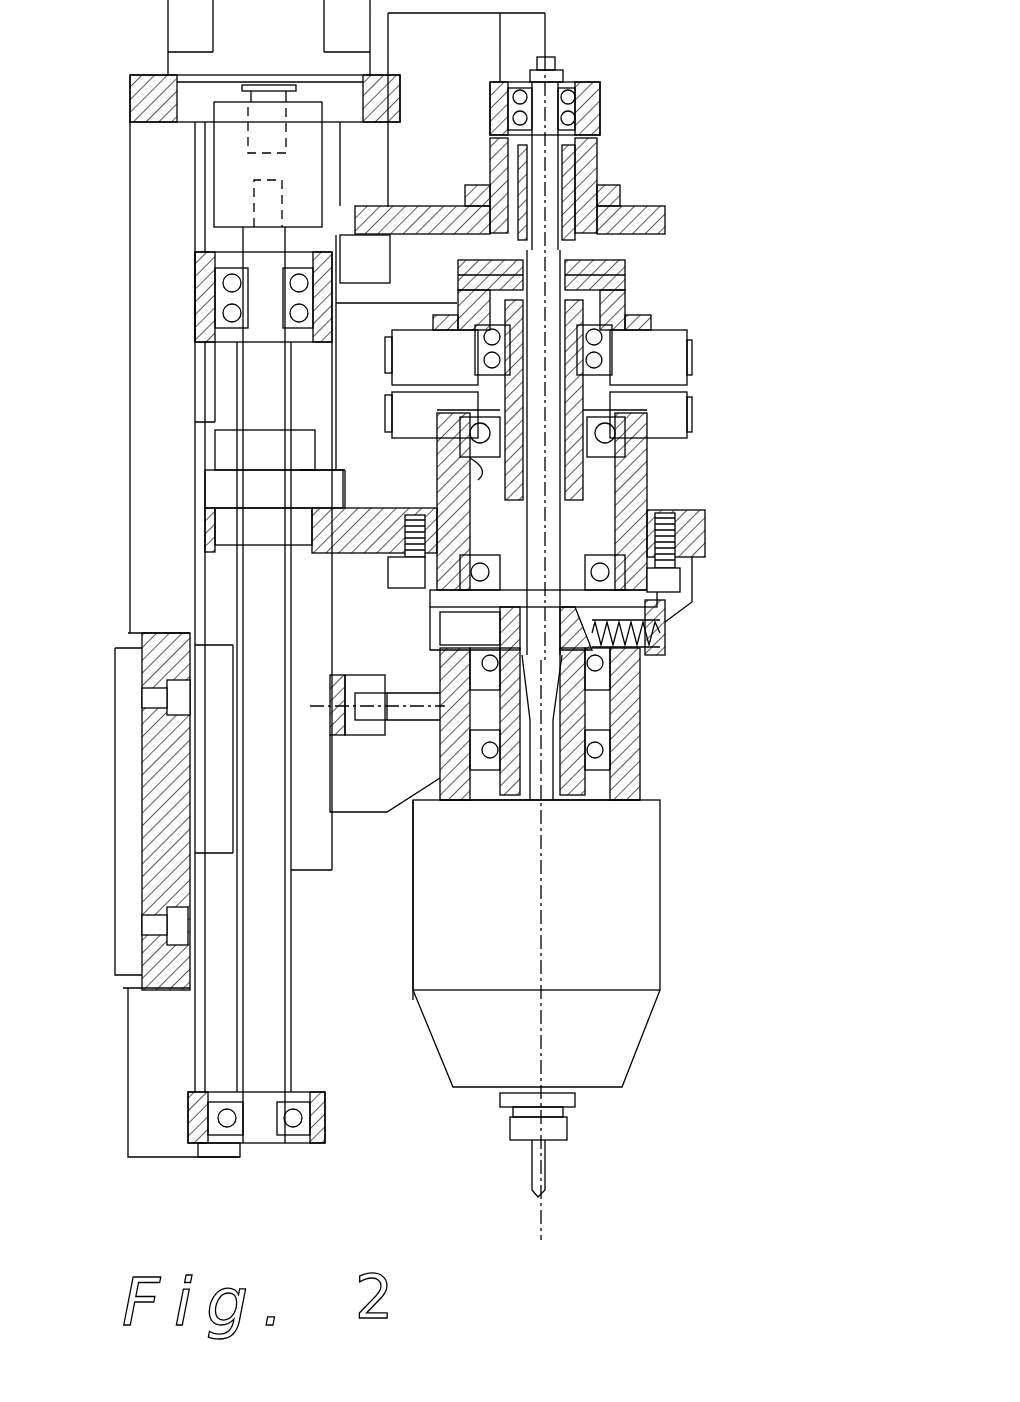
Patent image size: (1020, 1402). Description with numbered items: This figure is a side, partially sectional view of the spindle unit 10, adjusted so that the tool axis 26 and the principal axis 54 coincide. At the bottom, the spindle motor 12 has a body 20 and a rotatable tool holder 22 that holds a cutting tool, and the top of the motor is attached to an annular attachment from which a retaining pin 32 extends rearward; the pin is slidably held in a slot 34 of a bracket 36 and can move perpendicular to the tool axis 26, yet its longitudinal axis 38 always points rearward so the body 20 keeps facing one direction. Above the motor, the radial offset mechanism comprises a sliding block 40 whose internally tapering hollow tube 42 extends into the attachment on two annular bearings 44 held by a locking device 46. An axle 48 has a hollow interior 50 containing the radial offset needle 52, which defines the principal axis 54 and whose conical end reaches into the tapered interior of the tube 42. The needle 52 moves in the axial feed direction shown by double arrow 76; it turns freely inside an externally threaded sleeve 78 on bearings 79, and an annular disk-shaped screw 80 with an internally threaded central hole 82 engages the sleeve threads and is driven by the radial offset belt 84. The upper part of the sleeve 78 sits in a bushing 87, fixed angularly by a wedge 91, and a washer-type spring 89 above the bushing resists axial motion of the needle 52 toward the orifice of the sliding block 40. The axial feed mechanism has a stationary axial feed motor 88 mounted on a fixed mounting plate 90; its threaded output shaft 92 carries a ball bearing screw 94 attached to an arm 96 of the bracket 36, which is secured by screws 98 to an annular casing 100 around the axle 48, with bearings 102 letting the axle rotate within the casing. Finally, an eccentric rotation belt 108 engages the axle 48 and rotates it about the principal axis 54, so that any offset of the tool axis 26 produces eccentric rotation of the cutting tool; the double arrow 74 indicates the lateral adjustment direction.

The spindle unit 10 is at (754, 99).
The spindle motor 12 is at (708, 1078).
The body 20 is at (643, 935).
The rotatable tool holder 22 is at (560, 1128).
The tool axis 26 is at (541, 860).
The retaining pin 32 is at (387, 812).
The slot 34 is at (360, 683).
The bracket 36 is at (380, 784).
The longitudinal axis 38 is at (395, 708).
The sliding block 40 is at (640, 660).
The hollow tube 42 is at (560, 712).
The annular bearings 44 is at (620, 790).
The locking device 46 is at (620, 788).
The axle 48 is at (556, 515).
The hollow interior 50 is at (552, 540).
The radial offset needle 52 is at (700, 539).
The principal axis 54 is at (548, 490).
The lateral adjustment direction 74 is at (728, 630).
The double arrow 76 is at (537, 1256).
The externally threaded sleeve 78 is at (585, 233).
The bearings 79 is at (575, 86).
The disk-shaped screw 80 is at (624, 286).
The central hole 82 is at (458, 279).
The radial offset belt 84 is at (668, 341).
The bushing 87 is at (510, 175).
The axial feed motor 88 is at (178, 27).
The washer-type spring 89 is at (600, 120).
The mounting plate 90 is at (150, 335).
The wedge 91 is at (510, 170).
The threaded output shaft 92 is at (258, 380).
The ball bearing screw 94 is at (222, 488).
The arm 96 is at (330, 530).
The screws 98 is at (668, 583).
The annular casing 100 is at (437, 465).
The bearings 102 is at (478, 480).
The eccentric rotation belt 108 is at (407, 415).